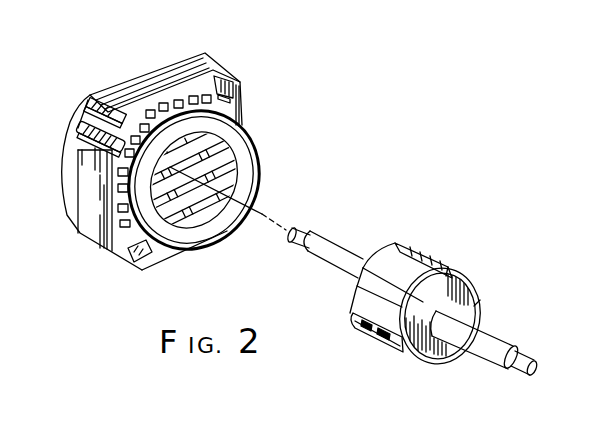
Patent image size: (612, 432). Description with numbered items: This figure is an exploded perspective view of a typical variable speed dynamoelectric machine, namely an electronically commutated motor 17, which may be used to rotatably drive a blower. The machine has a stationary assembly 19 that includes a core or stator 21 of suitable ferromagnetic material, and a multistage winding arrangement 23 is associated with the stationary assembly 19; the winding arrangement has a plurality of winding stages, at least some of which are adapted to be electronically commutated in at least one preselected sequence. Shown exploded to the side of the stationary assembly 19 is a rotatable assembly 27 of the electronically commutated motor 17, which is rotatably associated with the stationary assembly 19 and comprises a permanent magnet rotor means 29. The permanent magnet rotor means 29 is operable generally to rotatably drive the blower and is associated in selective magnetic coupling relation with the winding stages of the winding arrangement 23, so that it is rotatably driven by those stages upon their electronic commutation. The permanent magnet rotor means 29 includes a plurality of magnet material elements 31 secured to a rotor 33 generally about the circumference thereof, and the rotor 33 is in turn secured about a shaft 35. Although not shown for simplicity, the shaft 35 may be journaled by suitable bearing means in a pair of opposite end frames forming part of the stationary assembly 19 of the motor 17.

The electronically commutated motor 17 is at (209, 48).
The stationary assembly 19 is at (93, 218).
The core or stator 21 is at (223, 152).
The multistage winding arrangement 23 is at (262, 161).
The rotatable assembly 27 is at (399, 367).
The permanent magnet rotor means 29 is at (466, 290).
The magnet material elements 31 is at (398, 270).
The rotor 33 is at (447, 363).
The shaft 35 is at (496, 368).